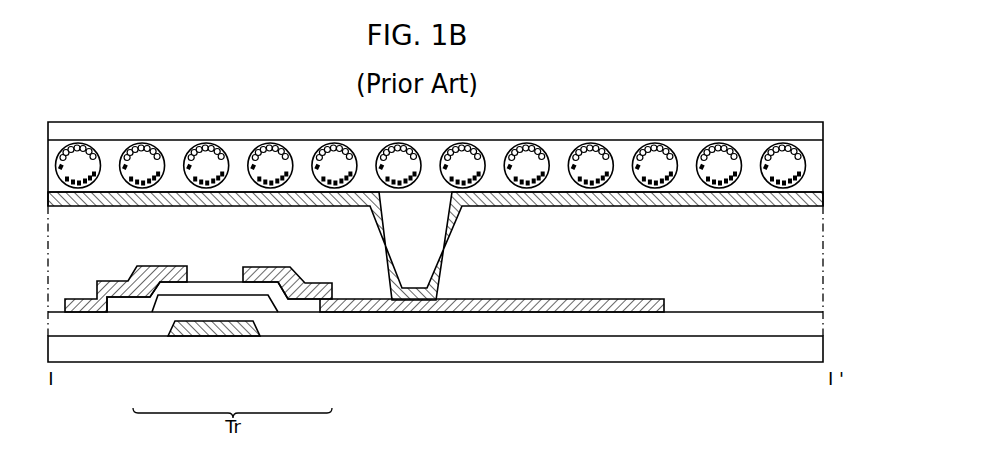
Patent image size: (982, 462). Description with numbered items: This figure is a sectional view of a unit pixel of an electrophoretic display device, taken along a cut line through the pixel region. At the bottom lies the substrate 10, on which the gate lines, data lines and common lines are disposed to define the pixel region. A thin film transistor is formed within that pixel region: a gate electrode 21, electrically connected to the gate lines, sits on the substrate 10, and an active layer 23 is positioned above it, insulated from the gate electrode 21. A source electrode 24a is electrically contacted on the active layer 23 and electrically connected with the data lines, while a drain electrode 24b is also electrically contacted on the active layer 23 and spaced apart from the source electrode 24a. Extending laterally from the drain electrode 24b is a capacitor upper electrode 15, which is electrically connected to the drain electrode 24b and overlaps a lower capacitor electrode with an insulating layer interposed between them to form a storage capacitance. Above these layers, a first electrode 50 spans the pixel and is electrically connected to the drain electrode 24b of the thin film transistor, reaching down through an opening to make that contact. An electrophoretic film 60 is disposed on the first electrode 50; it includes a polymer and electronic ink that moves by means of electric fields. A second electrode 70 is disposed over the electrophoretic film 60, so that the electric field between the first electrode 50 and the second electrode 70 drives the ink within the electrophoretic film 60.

The second electrode 70 is at (823, 133).
The electrophoretic film 60 is at (823, 165).
The first electrode 50 is at (823, 196).
The capacitor upper electrode 15 is at (522, 313).
The substrate 10 is at (817, 350).
The gate electrode 21 is at (202, 336).
The active layer 23 is at (237, 290).
The source electrode 24a is at (127, 298).
The drain electrode 24b is at (307, 299).